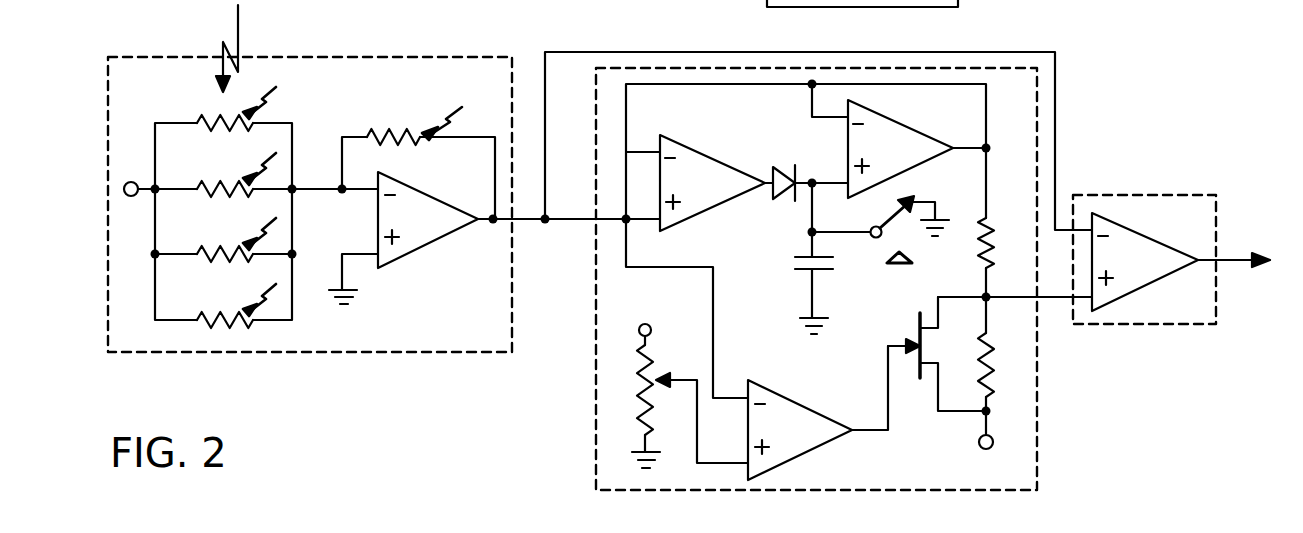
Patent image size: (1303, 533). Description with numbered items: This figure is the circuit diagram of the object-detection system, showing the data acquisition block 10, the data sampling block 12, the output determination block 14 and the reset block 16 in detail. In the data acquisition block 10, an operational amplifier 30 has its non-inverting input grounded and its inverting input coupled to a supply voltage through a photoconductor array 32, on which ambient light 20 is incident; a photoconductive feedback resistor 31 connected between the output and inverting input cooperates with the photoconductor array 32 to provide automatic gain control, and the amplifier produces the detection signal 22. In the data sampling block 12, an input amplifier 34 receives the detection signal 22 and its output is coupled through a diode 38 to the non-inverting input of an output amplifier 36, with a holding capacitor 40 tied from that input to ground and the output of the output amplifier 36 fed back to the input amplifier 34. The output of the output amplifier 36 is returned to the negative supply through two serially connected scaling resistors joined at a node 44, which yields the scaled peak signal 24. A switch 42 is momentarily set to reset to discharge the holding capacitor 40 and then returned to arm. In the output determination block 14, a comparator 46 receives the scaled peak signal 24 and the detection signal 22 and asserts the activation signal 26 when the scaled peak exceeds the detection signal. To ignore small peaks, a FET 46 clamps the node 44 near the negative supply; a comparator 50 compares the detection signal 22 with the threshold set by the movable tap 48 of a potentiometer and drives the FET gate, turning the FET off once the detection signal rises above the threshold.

The data acquisition block 10 is at (120, 355).
The data sampling block 12 is at (597, 348).
The output determination block 14 is at (1090, 325).
The reset block 16 is at (965, 0).
The ambient light 20 is at (240, 26).
The detection signal 22 is at (545, 222).
The scaled peak signal 24 is at (1057, 298).
The activation signal 26 is at (1235, 259).
The operational amplifier 30 is at (410, 257).
The photoconductive feedback resistor 31 is at (400, 153).
The photoconductor array 32 is at (293, 140).
The input amplifier 34 is at (742, 172).
The output amplifier 36 is at (936, 106).
The diode 38 is at (778, 170).
The holding capacitor 40 is at (797, 270).
The switch 42 is at (872, 236).
The node 44 is at (988, 300).
The comparator 46 is at (1130, 228).
The movable tap 48 is at (666, 377).
The comparator 50 is at (783, 392).